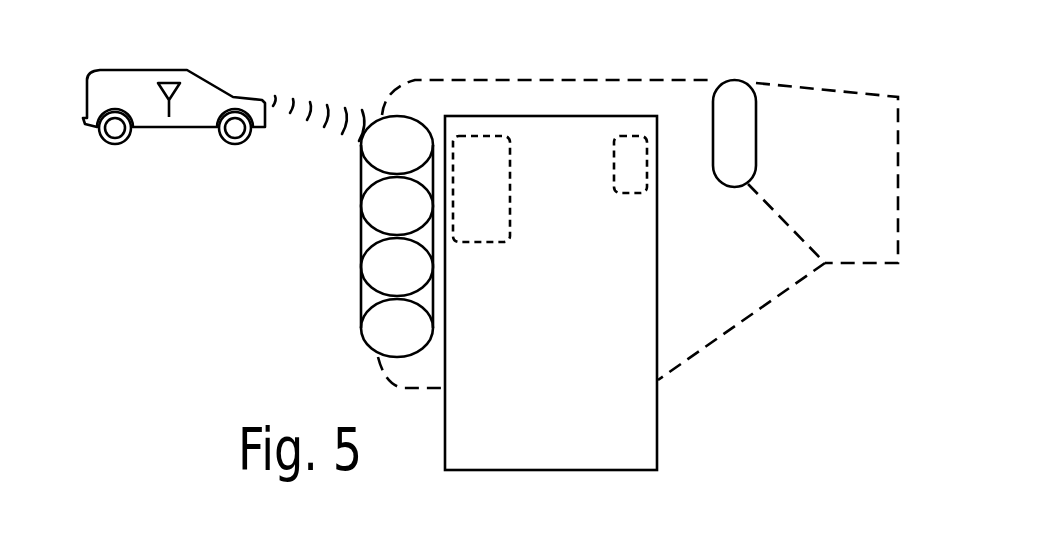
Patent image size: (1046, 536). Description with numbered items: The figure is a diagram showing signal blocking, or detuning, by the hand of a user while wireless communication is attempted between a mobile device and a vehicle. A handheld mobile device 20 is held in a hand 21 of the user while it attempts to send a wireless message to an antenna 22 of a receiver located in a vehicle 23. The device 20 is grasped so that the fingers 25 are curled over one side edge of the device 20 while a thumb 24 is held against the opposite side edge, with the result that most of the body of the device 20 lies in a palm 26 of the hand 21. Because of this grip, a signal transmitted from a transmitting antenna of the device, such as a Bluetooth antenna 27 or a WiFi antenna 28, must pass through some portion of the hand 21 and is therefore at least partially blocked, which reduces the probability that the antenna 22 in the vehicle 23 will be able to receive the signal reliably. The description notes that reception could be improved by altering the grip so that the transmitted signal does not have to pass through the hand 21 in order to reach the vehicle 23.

The handheld mobile device 20 is at (669, 426).
The hand 21 is at (543, 62).
The antenna 22 is at (172, 107).
The vehicle 23 is at (125, 68).
The thumb 24 is at (738, 100).
The fingers 25 is at (349, 289).
The palm 26 is at (683, 235).
The Bluetooth antenna 27 is at (615, 177).
The WiFi antenna 28 is at (472, 243).